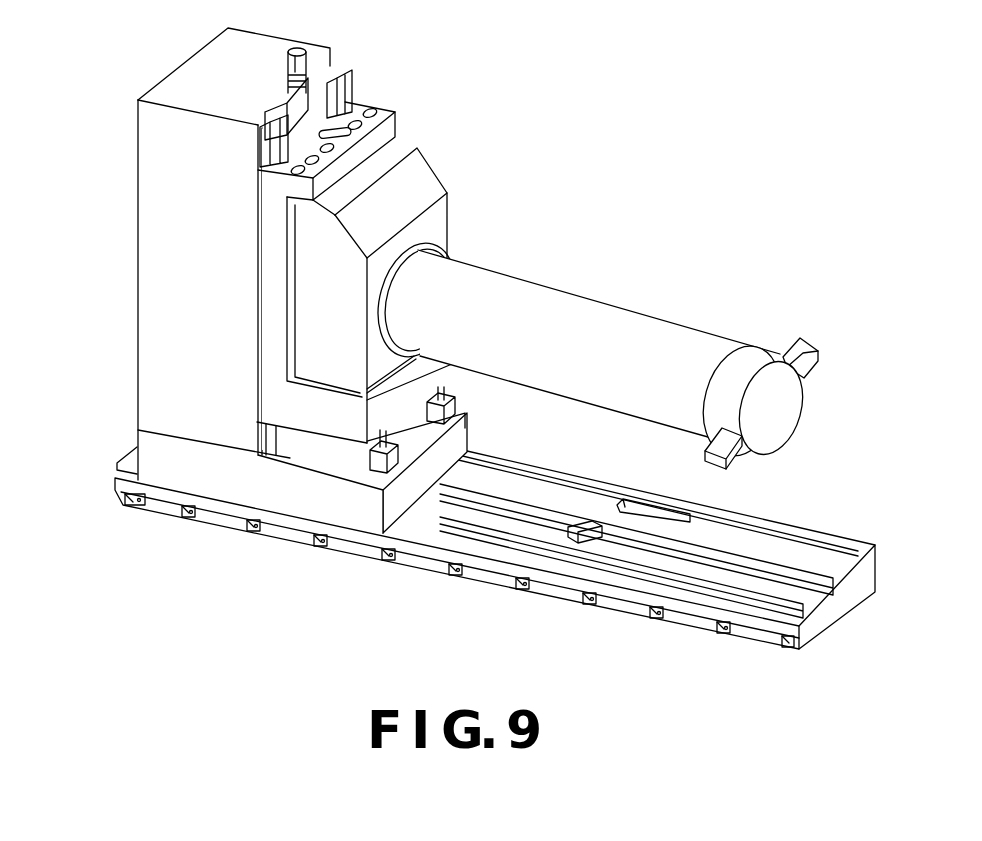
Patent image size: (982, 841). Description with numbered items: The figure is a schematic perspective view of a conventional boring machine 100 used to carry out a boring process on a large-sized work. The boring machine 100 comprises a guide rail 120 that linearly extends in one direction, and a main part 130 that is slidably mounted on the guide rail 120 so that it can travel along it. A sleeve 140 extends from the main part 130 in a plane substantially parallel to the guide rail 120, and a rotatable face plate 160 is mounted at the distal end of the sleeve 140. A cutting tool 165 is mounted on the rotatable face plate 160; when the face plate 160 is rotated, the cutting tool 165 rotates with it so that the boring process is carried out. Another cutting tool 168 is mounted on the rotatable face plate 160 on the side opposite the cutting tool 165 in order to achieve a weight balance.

The boring machine 100 is at (469, 342).
The guide rail 120 is at (545, 602).
The main part 130 is at (122, 296).
The sleeve 140 is at (571, 320).
The rotatable face plate 160 is at (773, 401).
The cutting tool 165 is at (802, 354).
The cutting tool 168 is at (733, 463).